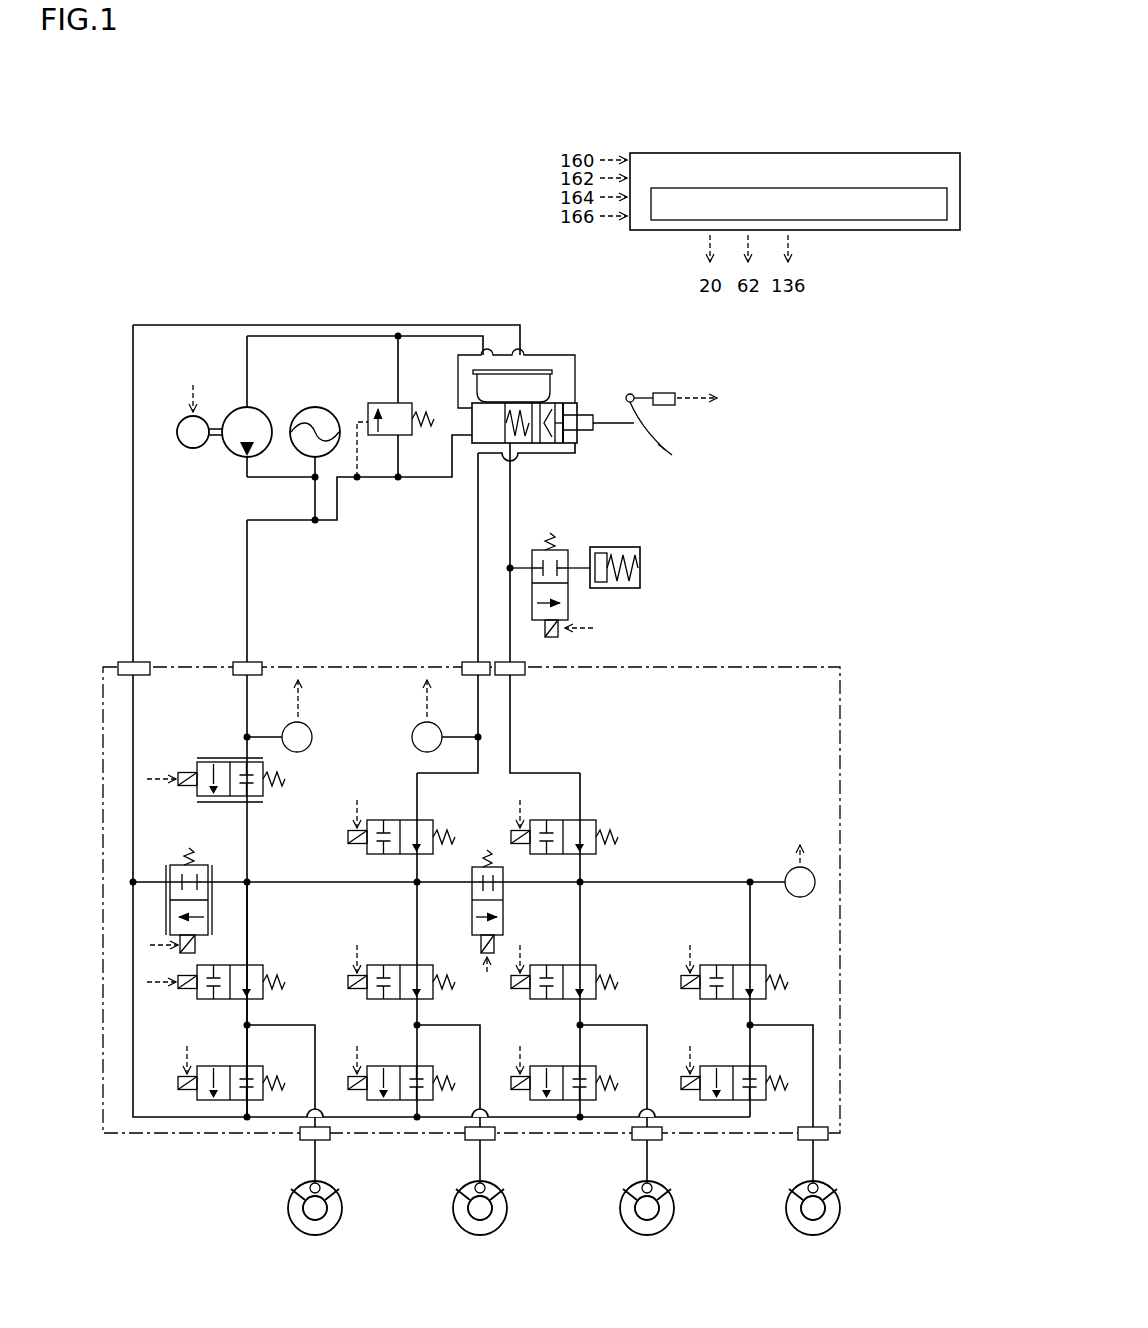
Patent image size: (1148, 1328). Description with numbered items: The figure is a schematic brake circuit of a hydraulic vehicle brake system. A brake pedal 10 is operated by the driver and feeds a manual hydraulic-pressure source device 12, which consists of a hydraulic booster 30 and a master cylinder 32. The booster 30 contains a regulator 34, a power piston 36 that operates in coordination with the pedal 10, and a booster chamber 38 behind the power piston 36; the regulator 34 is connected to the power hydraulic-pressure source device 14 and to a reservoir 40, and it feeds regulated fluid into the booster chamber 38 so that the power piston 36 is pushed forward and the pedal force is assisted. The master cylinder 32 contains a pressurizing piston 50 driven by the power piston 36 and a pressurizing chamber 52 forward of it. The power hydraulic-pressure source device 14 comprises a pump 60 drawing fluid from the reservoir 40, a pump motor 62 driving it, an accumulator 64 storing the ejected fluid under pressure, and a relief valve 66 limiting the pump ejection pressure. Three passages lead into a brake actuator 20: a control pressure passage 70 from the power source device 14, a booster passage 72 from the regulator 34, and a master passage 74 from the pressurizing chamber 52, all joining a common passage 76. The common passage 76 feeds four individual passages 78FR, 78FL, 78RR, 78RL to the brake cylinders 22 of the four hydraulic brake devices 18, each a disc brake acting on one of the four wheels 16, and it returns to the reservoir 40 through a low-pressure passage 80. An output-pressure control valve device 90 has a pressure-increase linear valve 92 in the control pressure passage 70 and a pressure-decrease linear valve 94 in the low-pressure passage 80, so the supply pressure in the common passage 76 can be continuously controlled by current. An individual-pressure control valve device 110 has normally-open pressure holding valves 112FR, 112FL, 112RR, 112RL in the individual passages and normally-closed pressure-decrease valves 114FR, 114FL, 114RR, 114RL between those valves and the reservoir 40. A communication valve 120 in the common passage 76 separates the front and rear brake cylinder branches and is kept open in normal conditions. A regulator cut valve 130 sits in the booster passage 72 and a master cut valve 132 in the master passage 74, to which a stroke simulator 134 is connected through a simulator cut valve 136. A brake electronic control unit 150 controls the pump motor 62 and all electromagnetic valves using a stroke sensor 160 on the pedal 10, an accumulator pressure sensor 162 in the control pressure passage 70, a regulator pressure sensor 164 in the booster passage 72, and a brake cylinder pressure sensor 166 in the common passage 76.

The brake pedal 10 is at (672, 452).
The manual hydraulic-pressure source device 12 is at (529, 396).
The power hydraulic-pressure source device 14 is at (326, 411).
The wheel 16 is at (303, 1227).
The hydraulic brake device 18 is at (570, 1214).
The brake actuator 20 is at (750, 666).
The brake cylinder 22 is at (311, 1183).
The hydraulic booster 30 is at (524, 445).
The master cylinder 32 is at (525, 396).
The regulator 34 is at (472, 427).
The power piston 36 is at (563, 447).
The booster chamber 38 is at (578, 440).
The reservoir 40 is at (473, 382).
The pressurizing piston 50 is at (540, 445).
The pressurizing chamber 52 is at (528, 443).
The pump 60 is at (252, 413).
The pump motor 62 is at (182, 417).
The accumulator 64 is at (312, 412).
The relief valve 66 is at (387, 407).
The control pressure passage 70 is at (247, 555).
The booster passage 72 is at (477, 590).
The master passage 74 is at (508, 543).
The common passage 76 is at (661, 874).
The individual passage 78RL is at (247, 905).
The individual passage 78RR is at (417, 897).
The individual passage 78FL is at (580, 908).
The individual passage 78FR is at (750, 940).
The low-pressure passage 80 is at (133, 493).
The output-pressure control valve device 90 is at (173, 844).
The pressure-increase linear valve 92 is at (225, 767).
The pressure-decrease linear valve 94 is at (208, 877).
The individual-pressure control valve device 110 is at (424, 1010).
The pressure holding valve 112RL is at (253, 970).
The pressure holding valve 112RR is at (403, 968).
The pressure holding valve 112FL is at (588, 969).
The pressure holding valve 112FR is at (743, 970).
The pressure-decrease valve 114RL is at (225, 1070).
The pressure-decrease valve 114RR is at (400, 1070).
The pressure-decrease valve 114FL is at (565, 1070).
The pressure-decrease valve 114FR is at (738, 1070).
The communication valve 120 is at (503, 893).
The regulator cut valve 130 is at (408, 823).
The master cut valve 132 is at (575, 823).
The stroke simulator 134 is at (642, 582).
The simulator cut valve 136 is at (567, 595).
The brake electronic control unit 150 is at (805, 153).
The stroke sensor 160 is at (677, 405).
The accumulator pressure sensor 162 is at (313, 735).
The regulator pressure sensor 164 is at (412, 735).
The brake cylinder pressure sensor 166 is at (785, 875).